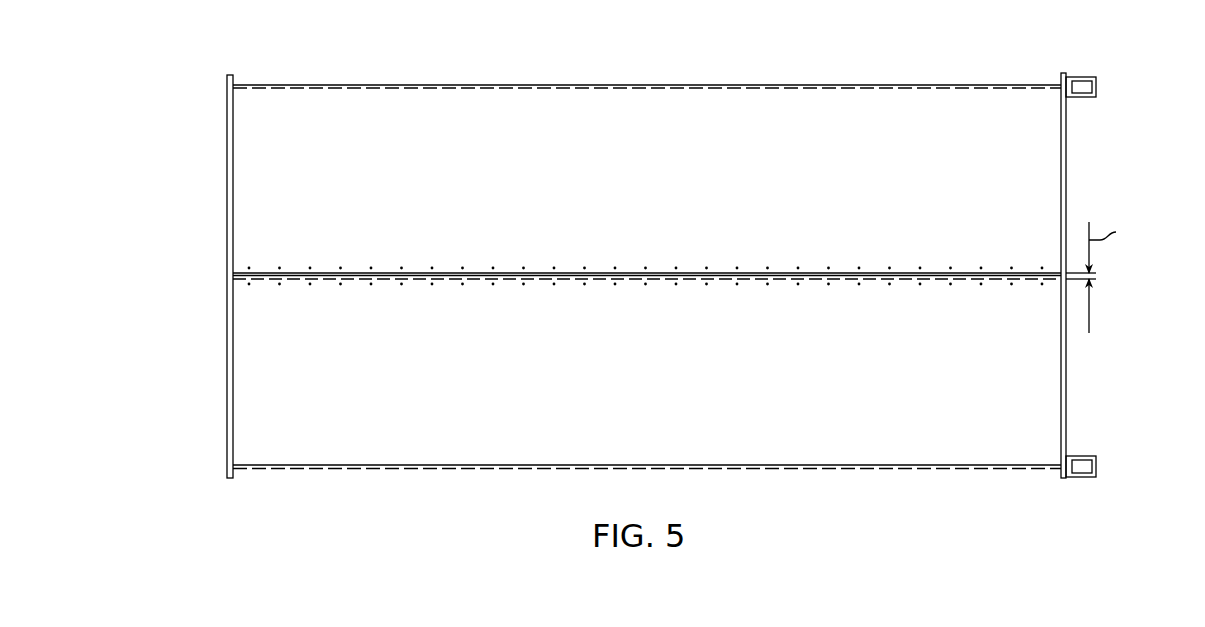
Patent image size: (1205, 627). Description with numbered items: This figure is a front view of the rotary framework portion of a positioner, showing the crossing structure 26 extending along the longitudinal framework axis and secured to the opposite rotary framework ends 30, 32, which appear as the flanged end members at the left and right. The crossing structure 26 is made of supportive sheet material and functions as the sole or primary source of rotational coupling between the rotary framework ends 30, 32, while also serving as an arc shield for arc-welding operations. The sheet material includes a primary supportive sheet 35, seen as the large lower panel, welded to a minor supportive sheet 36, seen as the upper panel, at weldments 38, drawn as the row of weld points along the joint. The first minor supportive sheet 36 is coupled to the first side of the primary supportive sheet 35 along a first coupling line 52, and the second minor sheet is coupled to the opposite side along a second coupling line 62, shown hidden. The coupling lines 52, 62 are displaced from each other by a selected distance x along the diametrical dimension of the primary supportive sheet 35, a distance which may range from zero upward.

The crossing structure 26 is at (682, 286).
The rotary framework end 30 is at (200, 239).
The rotary framework end 32 is at (1129, 252).
The primary supportive sheet 35 is at (618, 403).
The first minor supportive sheet 36 is at (602, 175).
The weldments 38 is at (790, 272).
The first coupling line 52 is at (488, 272).
The second coupling line 62 is at (413, 283).